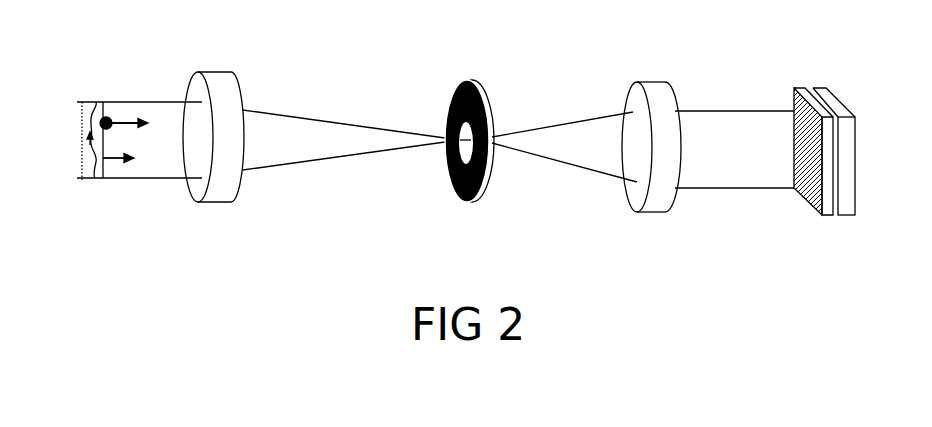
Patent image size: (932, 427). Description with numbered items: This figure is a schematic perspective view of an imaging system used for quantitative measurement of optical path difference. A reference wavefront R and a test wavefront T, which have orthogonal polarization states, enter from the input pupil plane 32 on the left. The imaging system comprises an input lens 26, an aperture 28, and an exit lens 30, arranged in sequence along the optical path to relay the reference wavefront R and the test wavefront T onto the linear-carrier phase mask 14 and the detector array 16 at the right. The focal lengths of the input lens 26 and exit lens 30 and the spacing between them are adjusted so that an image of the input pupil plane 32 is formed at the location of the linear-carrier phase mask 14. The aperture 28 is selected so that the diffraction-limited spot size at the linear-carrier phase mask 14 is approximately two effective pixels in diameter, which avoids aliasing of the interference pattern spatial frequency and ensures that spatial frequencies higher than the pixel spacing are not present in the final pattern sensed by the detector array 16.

The input pupil plane 32 is at (103, 118).
The reference wavefront R is at (103, 105).
The test wavefront T is at (95, 178).
The input lens 26 is at (227, 165).
The aperture 28 is at (484, 171).
The exit lens 30 is at (664, 177).
The linear-carrier phase mask 14 is at (801, 188).
The detector array 16 is at (859, 180).